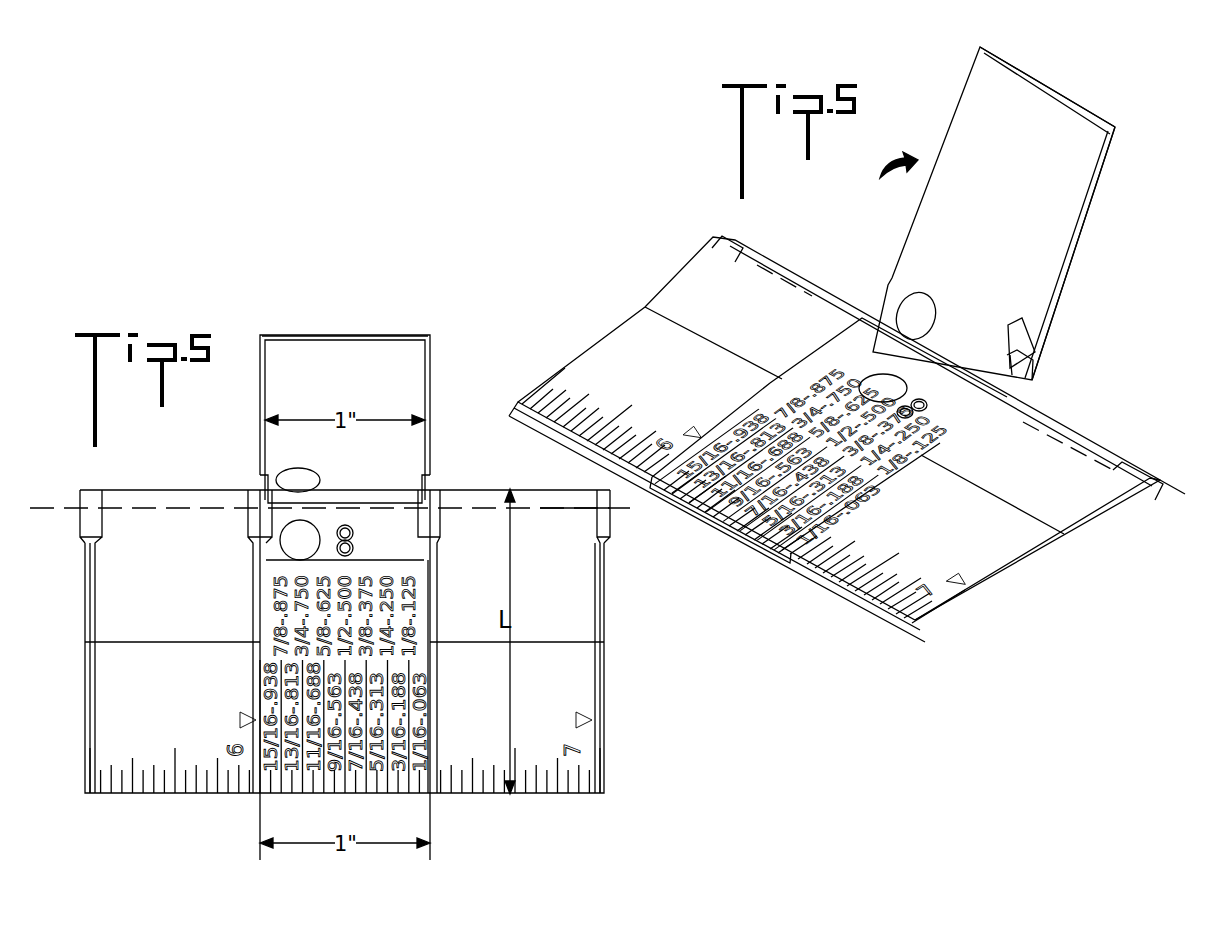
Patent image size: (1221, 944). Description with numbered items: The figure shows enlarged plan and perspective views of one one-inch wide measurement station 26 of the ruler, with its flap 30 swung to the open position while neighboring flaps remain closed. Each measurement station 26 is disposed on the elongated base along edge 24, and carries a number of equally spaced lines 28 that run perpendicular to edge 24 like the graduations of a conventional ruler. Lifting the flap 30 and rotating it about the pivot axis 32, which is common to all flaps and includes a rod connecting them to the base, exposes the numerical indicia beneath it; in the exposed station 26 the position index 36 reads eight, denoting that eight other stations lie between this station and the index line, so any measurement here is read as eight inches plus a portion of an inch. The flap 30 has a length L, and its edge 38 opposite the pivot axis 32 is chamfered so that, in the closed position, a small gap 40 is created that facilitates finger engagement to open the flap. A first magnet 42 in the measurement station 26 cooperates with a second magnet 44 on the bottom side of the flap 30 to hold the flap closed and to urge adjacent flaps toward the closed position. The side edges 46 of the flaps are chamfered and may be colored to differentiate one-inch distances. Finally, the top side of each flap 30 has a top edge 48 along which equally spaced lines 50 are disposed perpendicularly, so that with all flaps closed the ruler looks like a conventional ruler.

In FIG. 5, the edge 24 is at (380, 790).
In FIG. 6, the edge 24 is at (815, 585).
In FIG. 5, the one-inch wide measurement station 26 is at (372, 554).
In FIG. 6, the one-inch wide measurement station 26 is at (938, 432).
In FIG. 5, the equally spaced lines 28 is at (333, 787).
In FIG. 5, the flap 30 is at (413, 397).
In FIG. 6, the flap 30 is at (1045, 242).
In FIG. 5, the pivot axis 32 is at (612, 510).
In FIG. 6, the pivot axis 32 is at (1158, 500).
In FIG. 5, the position index 36 is at (337, 527).
In FIG. 6, the position index 36 is at (930, 410).
In FIG. 5, the chamfered edge 38 is at (366, 335).
In FIG. 6, the chamfered edge 38 is at (1052, 96).
In FIG. 5, the gap 40 is at (198, 793).
In FIG. 6, the gap 40 is at (876, 612).
In FIG. 5, the first magnet 42 is at (295, 537).
In FIG. 6, the first magnet 42 is at (883, 388).
In FIG. 5, the second magnet 44 is at (290, 485).
In FIG. 6, the second magnet 44 is at (911, 312).
In FIG. 5, the side edges 46 is at (432, 580).
In FIG. 6, the side edges 46 is at (820, 358).
In FIG. 6, the top edge 48 is at (548, 435).
In FIG. 5, the equally spaced lines 50 is at (162, 790).
In FIG. 6, the equally spaced lines 50 is at (580, 412).